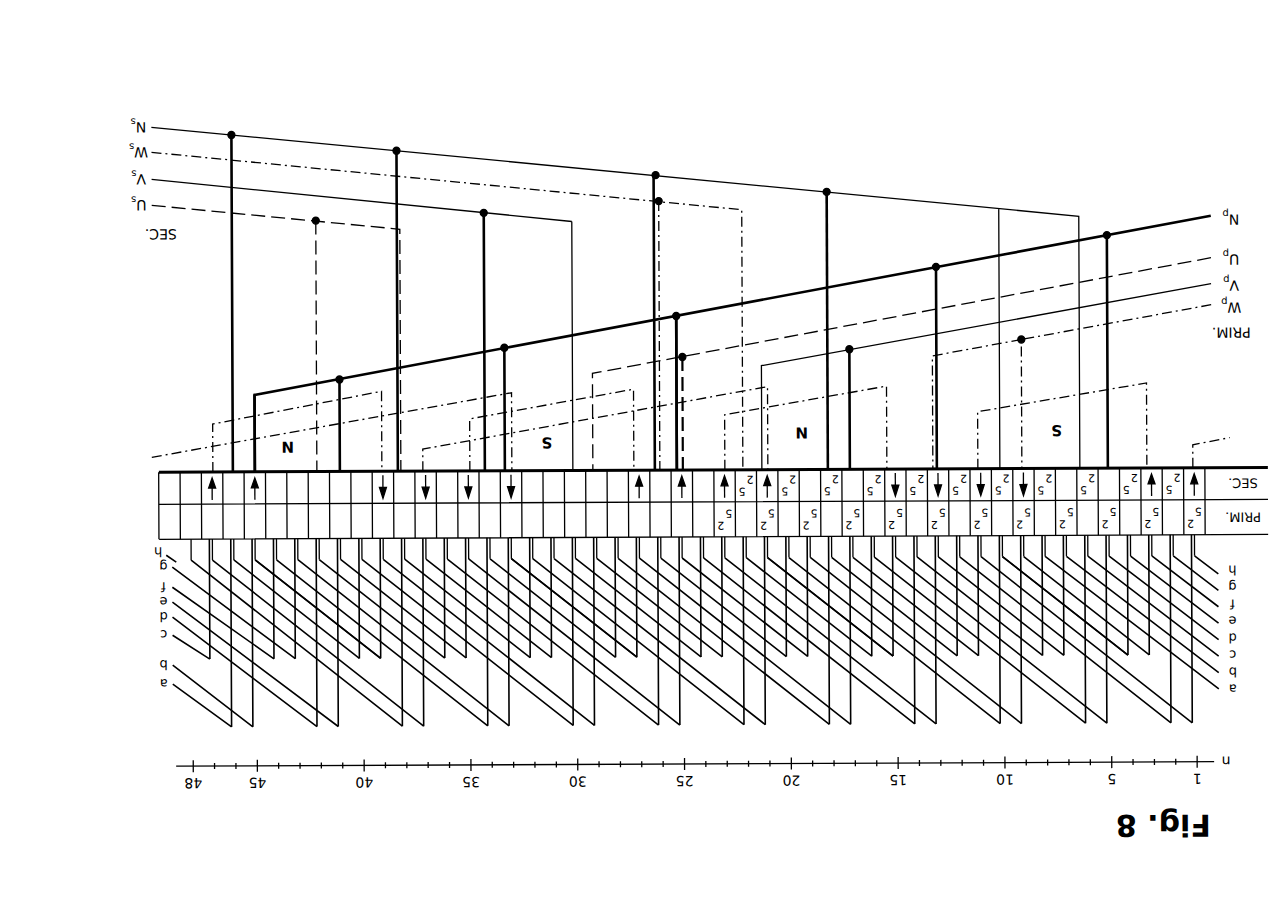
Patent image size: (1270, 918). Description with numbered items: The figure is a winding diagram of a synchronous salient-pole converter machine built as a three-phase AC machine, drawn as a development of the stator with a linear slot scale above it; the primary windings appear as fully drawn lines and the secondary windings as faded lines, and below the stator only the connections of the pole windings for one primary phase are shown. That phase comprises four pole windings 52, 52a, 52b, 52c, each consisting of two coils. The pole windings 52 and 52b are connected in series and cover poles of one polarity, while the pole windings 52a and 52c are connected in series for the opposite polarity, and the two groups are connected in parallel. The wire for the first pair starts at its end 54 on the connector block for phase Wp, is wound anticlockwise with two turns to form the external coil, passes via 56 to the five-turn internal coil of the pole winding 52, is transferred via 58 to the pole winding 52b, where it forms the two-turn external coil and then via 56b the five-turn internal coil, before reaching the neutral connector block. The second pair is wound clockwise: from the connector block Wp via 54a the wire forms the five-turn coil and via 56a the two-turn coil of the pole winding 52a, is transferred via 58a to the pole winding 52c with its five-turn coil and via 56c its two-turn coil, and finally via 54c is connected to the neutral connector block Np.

The pole winding 52 is at (1132, 655).
The pole winding 52a is at (890, 657).
The pole winding 52b is at (636, 659).
The pole winding 52c is at (383, 660).
The end of conductor wire 54 is at (1024, 368).
The wire connection 54a is at (931, 390).
The wire connection 54c is at (253, 393).
The transfer connection 56 is at (1149, 392).
The transfer connection 56a is at (803, 402).
The transfer connection 56b is at (533, 405).
The transfer connection 56c is at (226, 420).
The transfer connection 58 is at (163, 450).
The transfer connection 58a is at (560, 423).